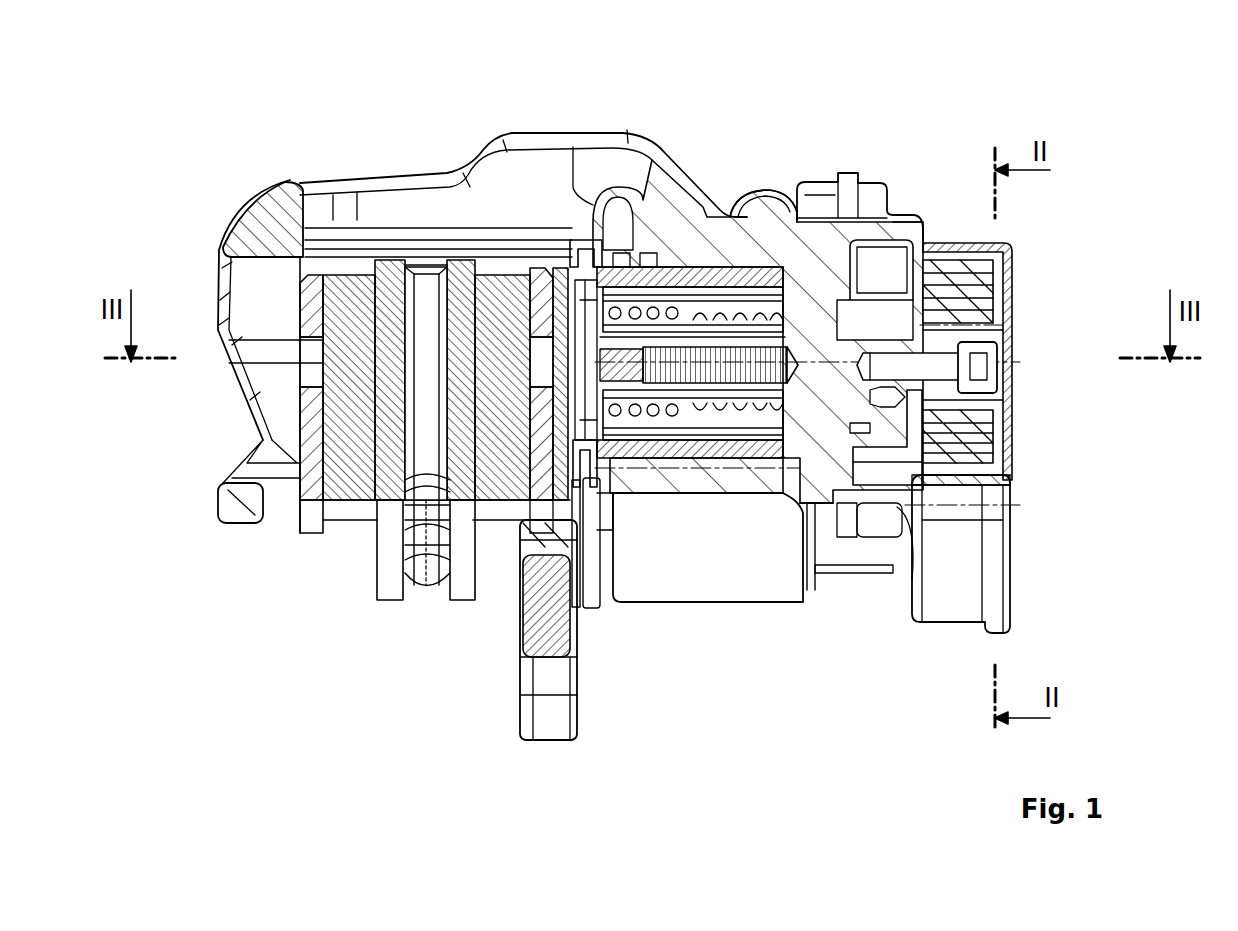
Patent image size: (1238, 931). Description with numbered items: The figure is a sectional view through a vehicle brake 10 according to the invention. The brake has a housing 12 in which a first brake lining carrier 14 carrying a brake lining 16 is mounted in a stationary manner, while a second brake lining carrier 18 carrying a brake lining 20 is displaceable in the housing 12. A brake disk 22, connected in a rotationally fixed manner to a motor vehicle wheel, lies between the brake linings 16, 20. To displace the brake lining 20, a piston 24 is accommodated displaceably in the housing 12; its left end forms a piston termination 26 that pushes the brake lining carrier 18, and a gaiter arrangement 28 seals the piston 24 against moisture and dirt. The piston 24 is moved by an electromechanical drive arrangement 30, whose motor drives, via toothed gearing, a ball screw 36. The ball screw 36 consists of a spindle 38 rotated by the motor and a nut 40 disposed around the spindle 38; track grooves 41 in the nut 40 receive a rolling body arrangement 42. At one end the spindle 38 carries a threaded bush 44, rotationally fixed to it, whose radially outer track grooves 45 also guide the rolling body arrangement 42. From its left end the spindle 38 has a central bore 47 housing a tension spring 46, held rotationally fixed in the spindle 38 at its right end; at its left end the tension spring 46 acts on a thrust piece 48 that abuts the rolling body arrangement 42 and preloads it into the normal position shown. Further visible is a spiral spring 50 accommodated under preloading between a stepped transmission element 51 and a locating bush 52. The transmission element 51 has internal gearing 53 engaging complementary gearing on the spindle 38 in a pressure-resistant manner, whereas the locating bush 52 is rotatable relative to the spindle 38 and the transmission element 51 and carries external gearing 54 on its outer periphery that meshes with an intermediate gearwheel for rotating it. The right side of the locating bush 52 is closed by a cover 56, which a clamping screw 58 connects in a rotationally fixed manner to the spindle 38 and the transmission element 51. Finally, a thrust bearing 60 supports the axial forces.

The vehicle brake 10 is at (825, 145).
The housing 12 is at (280, 200).
The first brake lining carrier 14 is at (300, 533).
The brake lining 16 is at (343, 272).
The second brake lining carrier 18 is at (540, 653).
The brake lining 20 is at (437, 173).
The brake disk 22 is at (460, 560).
The piston 24 is at (627, 493).
The piston termination 26 is at (555, 268).
The gaiter arrangement 28 is at (598, 523).
The electromechanical drive arrangement 30 is at (872, 292).
The ball screw 36 is at (700, 442).
The spindle 38 is at (828, 512).
The nut 40 is at (748, 440).
The track grooves 41 is at (703, 300).
The rolling body arrangement 42 is at (653, 458).
The threaded bush 44 is at (613, 306).
The track grooves 45 is at (427, 527).
The tension spring 46 is at (684, 287).
The central bore 47 is at (768, 192).
The thrust piece 48 is at (583, 240).
The spiral spring 50 is at (943, 300).
The stepped transmission element 51 is at (1004, 439).
The locating bush 52 is at (1022, 247).
The internal gearing 53 is at (1004, 396).
The external gearing 54 is at (1010, 487).
The cover 56 is at (1004, 294).
The clamping screw 58 is at (1004, 367).
The thrust bearing 60 is at (790, 497).